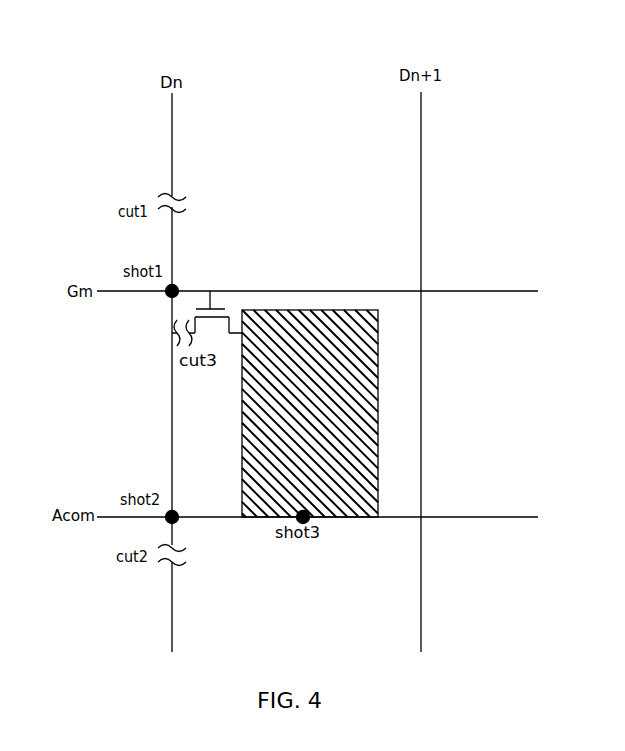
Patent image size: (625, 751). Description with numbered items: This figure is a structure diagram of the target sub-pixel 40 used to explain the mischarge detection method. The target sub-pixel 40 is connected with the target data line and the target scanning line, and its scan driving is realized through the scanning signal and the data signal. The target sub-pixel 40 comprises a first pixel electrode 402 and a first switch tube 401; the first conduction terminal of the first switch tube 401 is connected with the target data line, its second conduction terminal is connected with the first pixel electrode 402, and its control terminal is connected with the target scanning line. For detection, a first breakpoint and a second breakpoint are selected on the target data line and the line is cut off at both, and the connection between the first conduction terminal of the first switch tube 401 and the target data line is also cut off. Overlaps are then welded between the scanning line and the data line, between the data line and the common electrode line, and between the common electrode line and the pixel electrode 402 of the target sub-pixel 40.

The first switch tube 401 is at (225, 302).
The first pixel electrode 402 is at (242, 484).
The target sub-pixel 40 is at (444, 400).